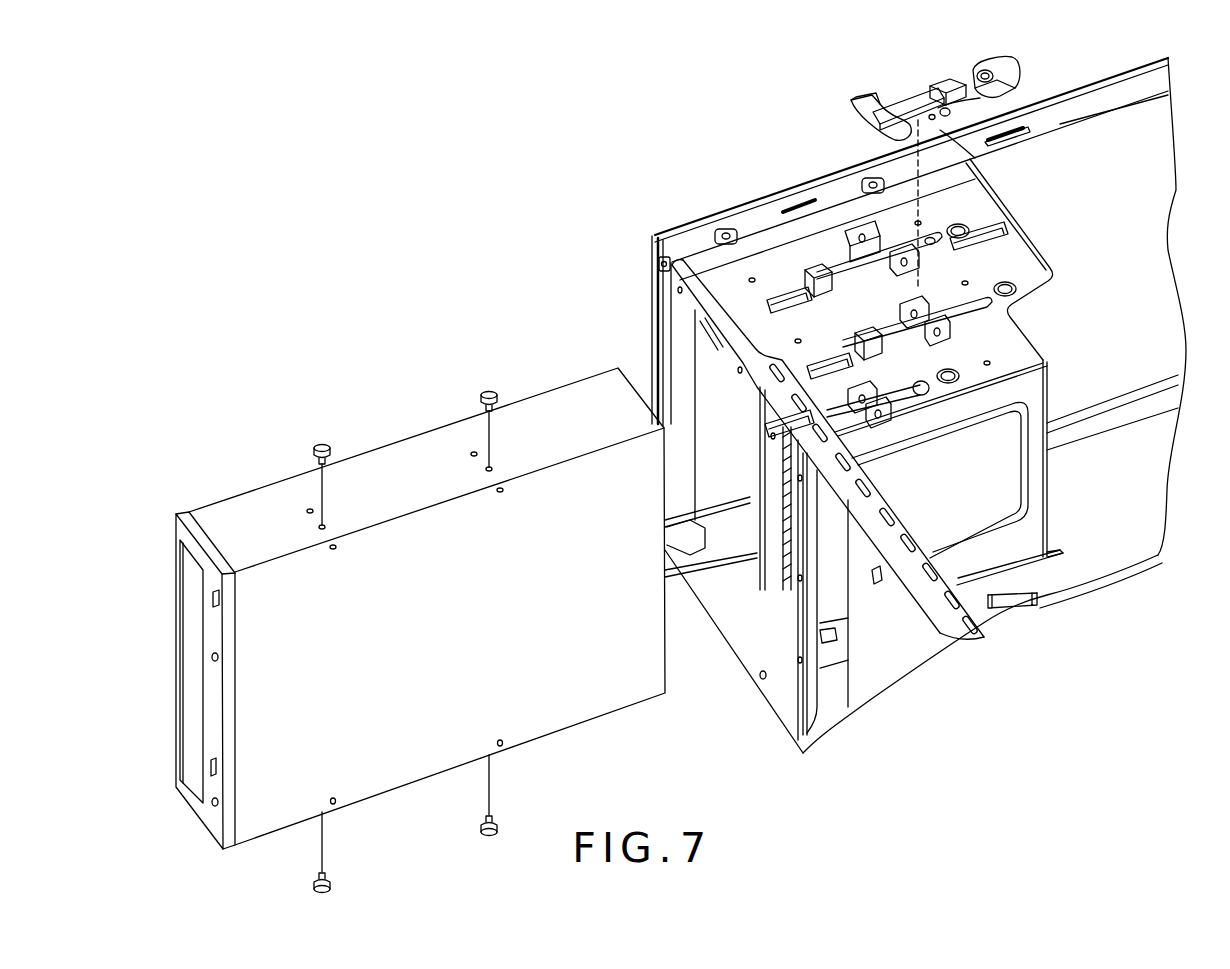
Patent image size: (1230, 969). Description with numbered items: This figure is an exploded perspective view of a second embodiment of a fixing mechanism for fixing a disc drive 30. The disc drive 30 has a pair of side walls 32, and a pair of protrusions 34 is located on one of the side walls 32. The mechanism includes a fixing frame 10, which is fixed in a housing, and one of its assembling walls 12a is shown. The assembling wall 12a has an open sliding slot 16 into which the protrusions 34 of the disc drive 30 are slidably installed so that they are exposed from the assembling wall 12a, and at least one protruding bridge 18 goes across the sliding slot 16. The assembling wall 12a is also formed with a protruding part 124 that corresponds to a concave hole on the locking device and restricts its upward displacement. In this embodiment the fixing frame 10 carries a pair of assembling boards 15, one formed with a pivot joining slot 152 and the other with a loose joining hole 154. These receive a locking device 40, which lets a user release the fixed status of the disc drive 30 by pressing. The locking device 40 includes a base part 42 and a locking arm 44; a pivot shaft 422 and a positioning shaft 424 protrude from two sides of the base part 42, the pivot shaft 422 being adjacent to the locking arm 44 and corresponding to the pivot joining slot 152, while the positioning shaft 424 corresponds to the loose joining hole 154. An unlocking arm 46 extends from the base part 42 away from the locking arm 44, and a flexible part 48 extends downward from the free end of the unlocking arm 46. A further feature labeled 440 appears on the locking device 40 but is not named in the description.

The fixing frame 10 is at (657, 230).
The assembling wall 12a is at (735, 222).
The assembling boards 15 is at (857, 233).
The sliding slot 16 is at (758, 255).
The protruding bridge 18 is at (782, 288).
The pivot joining slot 152 is at (855, 193).
The loose joining hole 154 is at (815, 265).
The protruding part 124 is at (970, 230).
The disc drive 30 is at (250, 488).
The side walls 32 is at (550, 402).
The protrusions 34 is at (330, 443).
The locking device 40 is at (1026, 65).
The base part 42 is at (940, 88).
The locking arm 44 is at (997, 75).
The unlocking arm 46 is at (907, 97).
The flexible part 48 is at (885, 128).
The pin 440 is at (997, 102).
The pivot shaft 422 is at (1023, 140).
The positioning shaft 424 is at (973, 152).